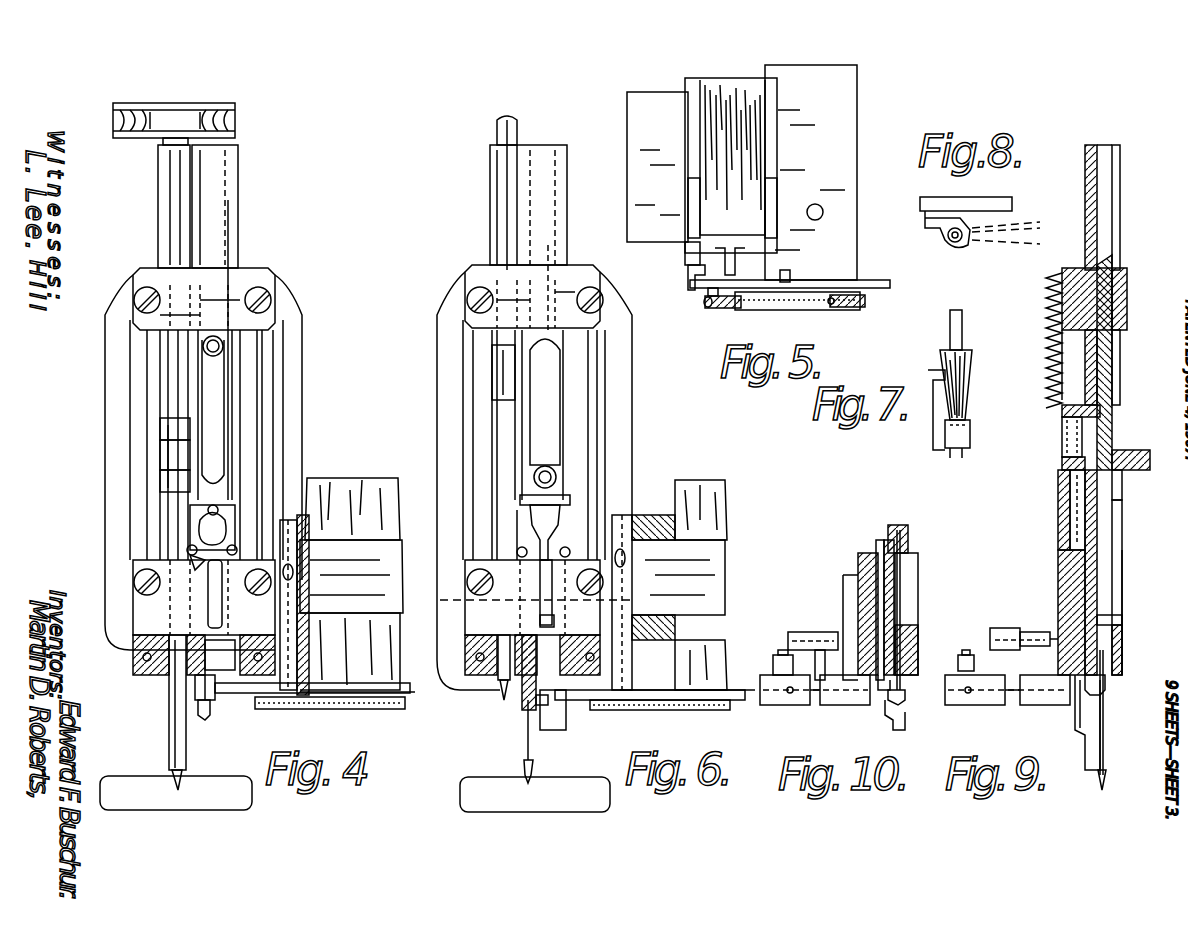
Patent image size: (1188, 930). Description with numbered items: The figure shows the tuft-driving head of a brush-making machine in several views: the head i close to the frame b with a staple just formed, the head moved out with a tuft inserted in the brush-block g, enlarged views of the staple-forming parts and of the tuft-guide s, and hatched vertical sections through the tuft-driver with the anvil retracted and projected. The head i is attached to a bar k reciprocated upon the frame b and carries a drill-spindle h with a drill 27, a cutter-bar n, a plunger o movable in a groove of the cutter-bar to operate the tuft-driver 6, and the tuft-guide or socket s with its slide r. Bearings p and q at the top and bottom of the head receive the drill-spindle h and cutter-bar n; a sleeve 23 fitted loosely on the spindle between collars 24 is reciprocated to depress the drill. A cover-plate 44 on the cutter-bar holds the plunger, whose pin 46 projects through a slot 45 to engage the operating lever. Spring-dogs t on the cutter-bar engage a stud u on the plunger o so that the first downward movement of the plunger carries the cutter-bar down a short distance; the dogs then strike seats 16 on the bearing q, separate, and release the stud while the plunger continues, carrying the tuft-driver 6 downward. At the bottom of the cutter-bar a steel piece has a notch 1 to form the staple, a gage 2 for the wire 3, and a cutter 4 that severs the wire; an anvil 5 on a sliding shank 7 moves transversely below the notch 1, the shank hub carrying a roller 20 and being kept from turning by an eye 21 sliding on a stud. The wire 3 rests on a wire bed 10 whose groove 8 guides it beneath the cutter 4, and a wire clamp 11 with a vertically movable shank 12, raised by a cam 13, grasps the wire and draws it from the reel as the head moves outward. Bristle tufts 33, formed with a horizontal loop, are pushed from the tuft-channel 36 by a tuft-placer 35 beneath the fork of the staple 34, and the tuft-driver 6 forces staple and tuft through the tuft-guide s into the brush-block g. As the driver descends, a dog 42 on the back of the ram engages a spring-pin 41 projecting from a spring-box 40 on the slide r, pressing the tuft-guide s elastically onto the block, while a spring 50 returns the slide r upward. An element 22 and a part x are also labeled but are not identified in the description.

In FIG. 4, the notch 1 is at (419, 682).
In FIG. 6, the notch 1 is at (440, 692).
In FIG. 5, the notch 1 is at (700, 252).
In FIG. 10, the notch 1 is at (905, 680).
In FIG. 5, the gage 2 is at (688, 285).
In FIG. 4, the wire 3 is at (362, 665).
In FIG. 6, the wire 3 is at (740, 690).
In FIG. 5, the wire 3 is at (880, 288).
In FIG. 5, the cutter 4 is at (735, 260).
In FIG. 5, the anvil 5 is at (708, 296).
In FIG. 9, the anvil 5 is at (1100, 692).
In FIG. 10, the anvil 5 is at (906, 695).
In FIG. 4, the tuft-driver 6 is at (220, 654).
In FIG. 6, the tuft-driver 6 is at (540, 744).
In FIG. 9, the tuft-driver 6 is at (1104, 740).
In FIG. 10, the tuft-driver 6 is at (902, 585).
In FIG. 9, the sliding shank 7 is at (1010, 700).
In FIG. 10, the sliding shank 7 is at (875, 700).
In FIG. 6, the groove 8 is at (575, 700).
In FIG. 5, the wire bed 10 is at (775, 285).
In FIG. 4, the wire clamp 11 is at (355, 660).
In FIG. 6, the wire clamp 11 is at (625, 700).
In FIG. 4, the shank 12 is at (290, 520).
In FIG. 6, the shank 12 is at (539, 603).
In FIG. 5, the cam 13 is at (710, 273).
In FIG. 4, the seats 16 is at (195, 565).
In FIG. 6, the seats 16 is at (530, 560).
In FIG. 9, the roller 20 is at (958, 660).
In FIG. 9, the eye 21 is at (1000, 628).
In FIG. 10, the block 22 is at (796, 632).
In FIG. 4, the sleeve 23 is at (172, 452).
In FIG. 4, the collars 24 is at (160, 428).
In FIG. 4, the drill 27 is at (172, 776).
In FIG. 6, the drill 27 is at (498, 692).
In FIG. 4, the bristle tufts 33 is at (210, 700).
In FIG. 6, the bristle tufts 33 is at (535, 780).
In FIG. 5, the bristle tufts 33 is at (718, 310).
In FIG. 8, the bristle tufts 33 is at (1000, 245).
In FIG. 7, the bristle tufts 33 is at (970, 385).
In FIG. 7, the staple 34 is at (950, 452).
In FIG. 5, the tuft-placer 35 is at (850, 310).
In FIG. 4, the tuft-channel 36 is at (295, 707).
In FIG. 6, the tuft-channel 36 is at (690, 710).
In FIG. 5, the tuft-channel 36 is at (805, 312).
In FIG. 9, the spring-box 40 is at (1058, 494).
In FIG. 9, the spring-pin 41 is at (1062, 450).
In FIG. 9, the dog 42 is at (1062, 412).
In FIG. 4, the cover-plate 44 is at (215, 500).
In FIG. 6, the cover-plate 44 is at (535, 495).
In FIG. 9, the cover-plate 44 is at (1118, 490).
In FIG. 6, the slot 45 is at (560, 440).
In FIG. 4, the pin 46 is at (217, 345).
In FIG. 6, the pin 46 is at (556, 477).
In FIG. 9, the pin 46 is at (1135, 450).
In FIG. 9, the spring 50 is at (1048, 345).
In FIG. 4, the frame b is at (360, 495).
In FIG. 6, the frame b is at (695, 492).
In FIG. 4, the brush-block g is at (112, 776).
In FIG. 6, the brush-block g is at (478, 778).
In FIG. 4, the drill-spindle h is at (170, 390).
In FIG. 6, the drill-spindle h is at (497, 133).
In FIG. 5, the head i is at (742, 172).
In FIG. 4, the bar k is at (351, 576).
In FIG. 6, the bar k is at (648, 520).
In FIG. 4, the cutter-bar n is at (238, 178).
In FIG. 6, the cutter-bar n is at (567, 205).
In FIG. 5, the cutter-bar n is at (731, 165).
In FIG. 9, the cutter-bar n is at (1085, 210).
In FIG. 10, the cutter-bar n is at (888, 540).
In FIG. 4, the plunger o is at (228, 210).
In FIG. 6, the plunger o is at (545, 262).
In FIG. 9, the plunger o is at (1103, 262).
In FIG. 10, the plunger o is at (908, 532).
In FIG. 4, the bearing p is at (250, 282).
In FIG. 6, the bearing p is at (510, 276).
In FIG. 4, the bearing q is at (140, 600).
In FIG. 6, the bearing q is at (472, 600).
In FIG. 9, the bearing q is at (1058, 552).
In FIG. 10, the bearing q is at (858, 558).
In FIG. 9, the slide r is at (1075, 715).
In FIG. 10, the slide r is at (875, 540).
In FIG. 4, the tuft-guide s is at (206, 720).
In FIG. 8, the tuft-guide s is at (955, 243).
In FIG. 7, the tuft-guide s is at (970, 432).
In FIG. 9, the tuft-guide s is at (1095, 778).
In FIG. 10, the tuft-guide s is at (898, 728).
In FIG. 4, the spring-dogs t is at (236, 545).
In FIG. 6, the spring-dogs t is at (575, 535).
In FIG. 4, the stud u is at (218, 508).
In FIG. 6, the stud u is at (556, 622).
In FIG. 9, the stud u is at (1122, 620).
In FIG. 7, the tube x is at (962, 320).